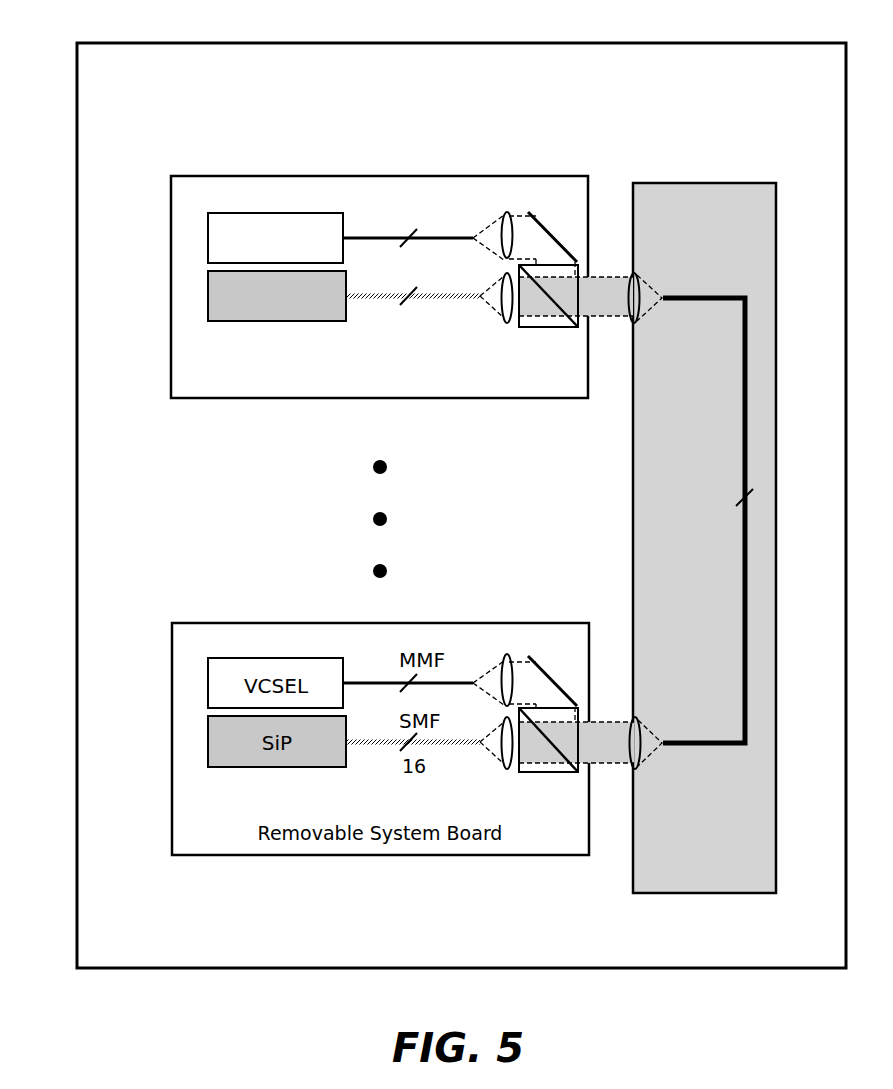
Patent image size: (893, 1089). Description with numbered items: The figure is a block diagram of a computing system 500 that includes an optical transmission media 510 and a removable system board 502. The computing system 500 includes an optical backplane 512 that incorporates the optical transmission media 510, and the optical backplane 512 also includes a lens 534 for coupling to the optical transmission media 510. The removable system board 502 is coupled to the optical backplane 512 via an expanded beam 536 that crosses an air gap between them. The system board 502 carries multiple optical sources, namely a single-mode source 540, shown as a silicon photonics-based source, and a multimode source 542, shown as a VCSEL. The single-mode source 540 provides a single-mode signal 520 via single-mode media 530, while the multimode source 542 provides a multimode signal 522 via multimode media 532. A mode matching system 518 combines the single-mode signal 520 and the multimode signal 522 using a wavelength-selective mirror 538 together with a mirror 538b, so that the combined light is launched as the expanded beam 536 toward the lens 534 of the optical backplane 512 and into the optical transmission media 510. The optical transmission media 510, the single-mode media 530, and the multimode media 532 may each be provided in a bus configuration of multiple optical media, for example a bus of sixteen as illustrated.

The computing system 500 is at (113, 43).
The removable system board 502 is at (230, 176).
The optical transmission media 510 is at (748, 407).
The optical backplane 512 is at (712, 122).
The mode matching system 518 is at (553, 162).
The single-mode signal 520 is at (527, 311).
The multimode signal 522 is at (527, 232).
The single-mode media 530 is at (388, 298).
The multimode media 532 is at (388, 236).
The lens 534 is at (508, 277).
The expanded beam 536 is at (613, 298).
The wavelength-selective mirror 538 is at (562, 308).
The mirror 538b is at (565, 238).
The single-mode source 540 is at (280, 318).
The multimode source 542 is at (280, 220).